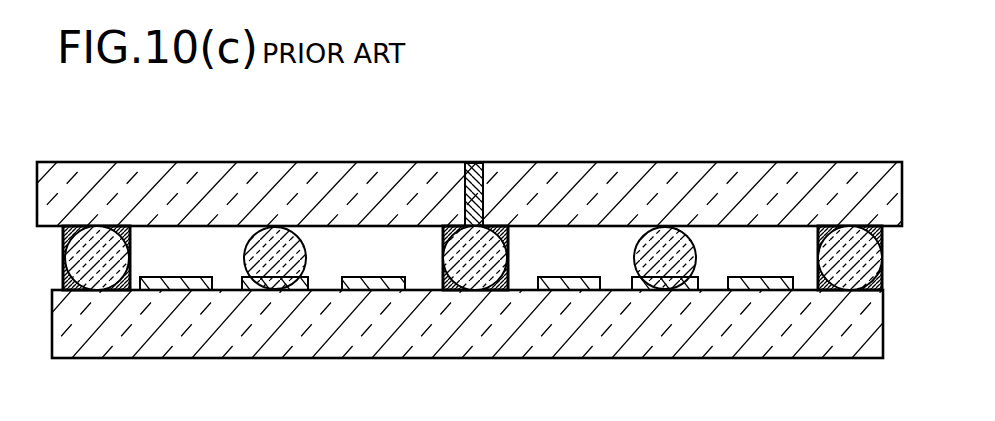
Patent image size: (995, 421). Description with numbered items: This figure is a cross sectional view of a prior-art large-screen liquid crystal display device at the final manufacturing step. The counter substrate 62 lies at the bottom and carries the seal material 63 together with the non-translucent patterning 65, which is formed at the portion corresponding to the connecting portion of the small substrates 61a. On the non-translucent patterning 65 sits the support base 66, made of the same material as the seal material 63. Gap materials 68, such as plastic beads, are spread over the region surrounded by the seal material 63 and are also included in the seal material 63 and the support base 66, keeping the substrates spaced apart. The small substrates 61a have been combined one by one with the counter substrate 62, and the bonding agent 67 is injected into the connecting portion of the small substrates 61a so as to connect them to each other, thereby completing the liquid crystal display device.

The small substrate 61a is at (181, 170).
The counter substrate 62 is at (848, 325).
The seal material 63 is at (818, 240).
The non-translucent patterning 65 is at (665, 291).
The support base 66 is at (443, 278).
The bonding agent 67 is at (478, 162).
The gap material 68 is at (131, 251).